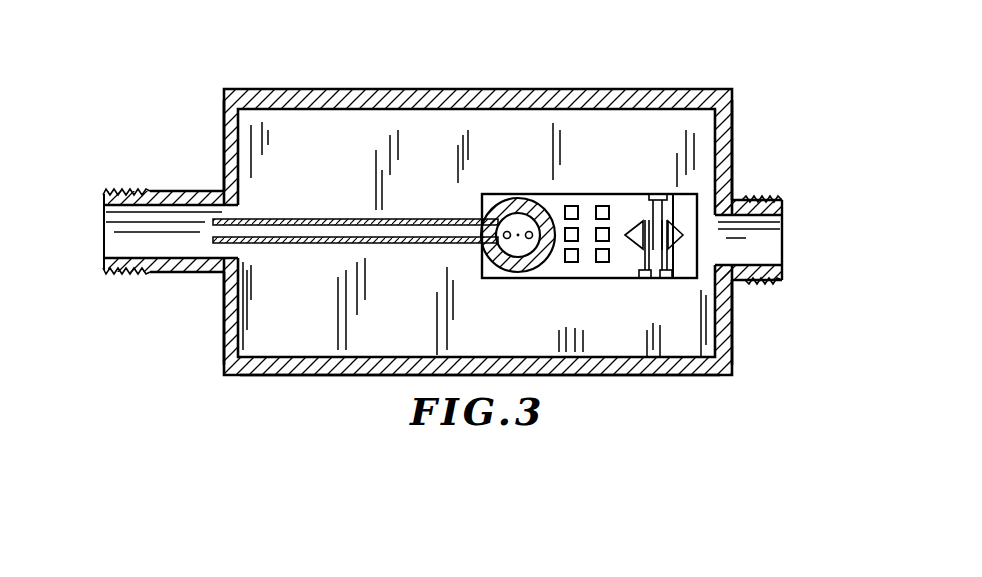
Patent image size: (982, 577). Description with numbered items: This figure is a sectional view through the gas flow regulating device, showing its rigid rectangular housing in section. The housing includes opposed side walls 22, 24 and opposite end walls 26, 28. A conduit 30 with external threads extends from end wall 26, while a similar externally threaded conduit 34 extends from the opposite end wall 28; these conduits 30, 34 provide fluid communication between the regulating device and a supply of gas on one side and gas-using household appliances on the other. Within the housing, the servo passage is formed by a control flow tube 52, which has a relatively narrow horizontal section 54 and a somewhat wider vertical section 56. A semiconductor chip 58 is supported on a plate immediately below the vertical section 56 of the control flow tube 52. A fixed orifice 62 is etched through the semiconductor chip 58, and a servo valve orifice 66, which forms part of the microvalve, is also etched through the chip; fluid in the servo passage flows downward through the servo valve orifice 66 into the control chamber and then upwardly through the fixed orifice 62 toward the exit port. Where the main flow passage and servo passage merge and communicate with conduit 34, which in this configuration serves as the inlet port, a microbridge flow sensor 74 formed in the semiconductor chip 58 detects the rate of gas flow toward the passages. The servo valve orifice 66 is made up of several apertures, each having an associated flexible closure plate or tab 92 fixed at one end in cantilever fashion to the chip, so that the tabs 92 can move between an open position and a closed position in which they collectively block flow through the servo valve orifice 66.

The side wall 22 is at (294, 105).
The side wall 24 is at (661, 366).
The end wall 26 is at (224, 118).
The end wall 28 is at (723, 332).
The conduit 30 is at (125, 190).
The conduit 34 is at (762, 200).
The control flow tube 52 is at (422, 245).
The horizontal section 54 is at (280, 218).
The vertical section 56 is at (519, 268).
The semiconductor chip 58 is at (631, 196).
The fixed orifice 62 is at (517, 223).
The servo valve orifice 66 is at (586, 196).
The microbridge flow sensor 74 is at (647, 268).
The closure plate or tab 92 is at (571, 263).